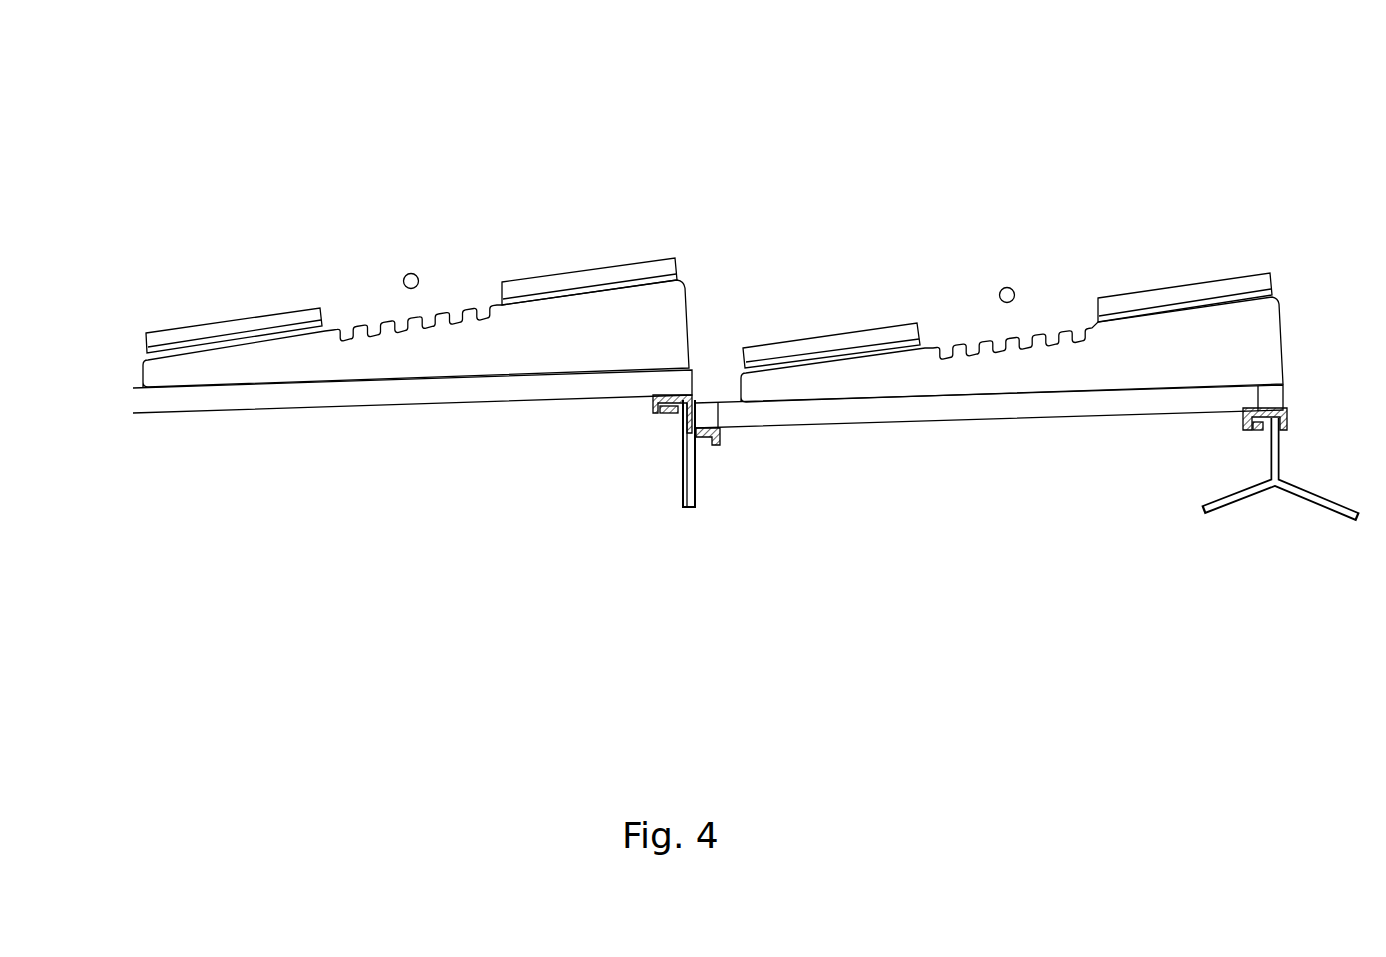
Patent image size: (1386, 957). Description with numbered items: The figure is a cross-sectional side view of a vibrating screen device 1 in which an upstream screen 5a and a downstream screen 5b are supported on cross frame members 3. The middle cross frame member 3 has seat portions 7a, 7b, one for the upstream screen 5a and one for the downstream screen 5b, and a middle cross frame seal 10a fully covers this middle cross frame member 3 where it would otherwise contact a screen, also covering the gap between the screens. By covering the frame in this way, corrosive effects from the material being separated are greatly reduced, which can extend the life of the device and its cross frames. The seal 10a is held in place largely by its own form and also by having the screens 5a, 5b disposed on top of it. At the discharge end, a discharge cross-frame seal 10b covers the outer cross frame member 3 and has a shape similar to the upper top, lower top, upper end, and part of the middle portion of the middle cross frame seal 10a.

The vibrating screen device 1 is at (444, 184).
The upstream screen 5a is at (395, 402).
The downstream screen 5b is at (822, 423).
The cross frame member 3 is at (669, 453).
The middle cross frame seal 10a is at (633, 416).
The discharge cross-frame seal 10b is at (1222, 432).
The seat portion 7a is at (657, 425).
The seat portion 7b is at (712, 463).